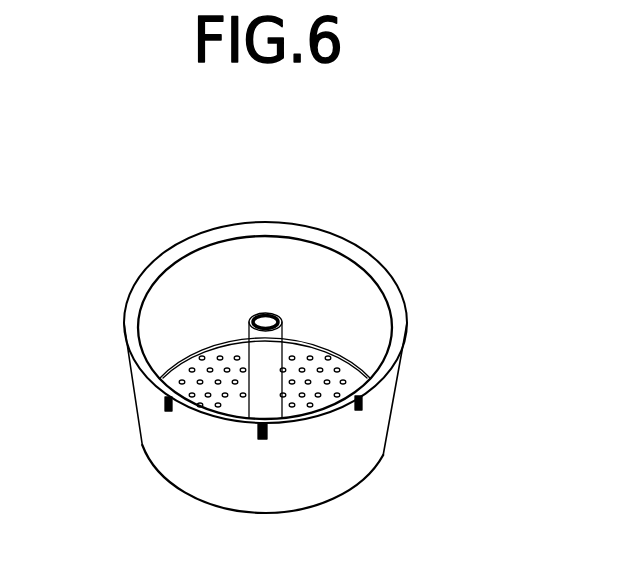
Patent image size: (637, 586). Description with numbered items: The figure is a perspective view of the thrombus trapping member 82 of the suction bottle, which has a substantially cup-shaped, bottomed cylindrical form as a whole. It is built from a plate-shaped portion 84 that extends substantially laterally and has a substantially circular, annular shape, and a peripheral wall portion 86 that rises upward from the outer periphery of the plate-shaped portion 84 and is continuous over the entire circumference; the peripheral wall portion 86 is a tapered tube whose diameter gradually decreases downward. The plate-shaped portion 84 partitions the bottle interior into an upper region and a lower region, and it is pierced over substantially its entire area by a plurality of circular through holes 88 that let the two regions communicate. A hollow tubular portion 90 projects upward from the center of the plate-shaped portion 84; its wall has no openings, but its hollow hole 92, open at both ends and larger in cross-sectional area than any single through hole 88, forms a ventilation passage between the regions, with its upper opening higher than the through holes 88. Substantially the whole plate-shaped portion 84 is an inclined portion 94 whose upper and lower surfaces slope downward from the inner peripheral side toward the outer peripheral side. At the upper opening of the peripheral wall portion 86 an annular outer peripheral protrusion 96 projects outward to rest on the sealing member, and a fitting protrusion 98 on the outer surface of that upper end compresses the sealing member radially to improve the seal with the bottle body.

The thrombus trapping member 82 is at (277, 372).
The plate-shaped portion 84 is at (216, 401).
The peripheral wall portion 86 is at (378, 414).
The through holes 88 is at (207, 368).
The tubular portion 90 is at (291, 301).
The hollow hole 92 is at (261, 318).
The inclined portion 94 is at (336, 360).
The outer peripheral protrusion 96 is at (128, 328).
The fitting protrusion 98 is at (165, 402).